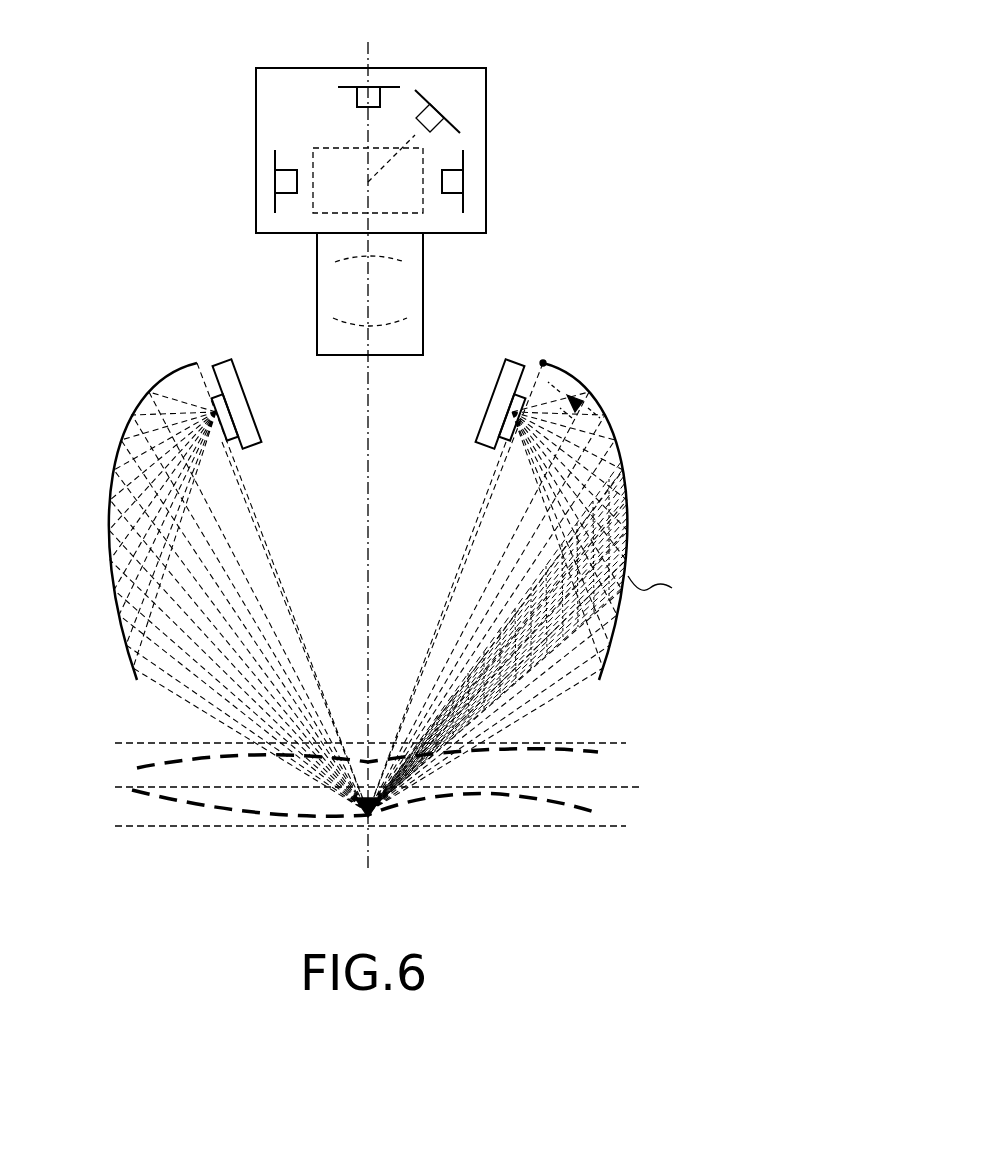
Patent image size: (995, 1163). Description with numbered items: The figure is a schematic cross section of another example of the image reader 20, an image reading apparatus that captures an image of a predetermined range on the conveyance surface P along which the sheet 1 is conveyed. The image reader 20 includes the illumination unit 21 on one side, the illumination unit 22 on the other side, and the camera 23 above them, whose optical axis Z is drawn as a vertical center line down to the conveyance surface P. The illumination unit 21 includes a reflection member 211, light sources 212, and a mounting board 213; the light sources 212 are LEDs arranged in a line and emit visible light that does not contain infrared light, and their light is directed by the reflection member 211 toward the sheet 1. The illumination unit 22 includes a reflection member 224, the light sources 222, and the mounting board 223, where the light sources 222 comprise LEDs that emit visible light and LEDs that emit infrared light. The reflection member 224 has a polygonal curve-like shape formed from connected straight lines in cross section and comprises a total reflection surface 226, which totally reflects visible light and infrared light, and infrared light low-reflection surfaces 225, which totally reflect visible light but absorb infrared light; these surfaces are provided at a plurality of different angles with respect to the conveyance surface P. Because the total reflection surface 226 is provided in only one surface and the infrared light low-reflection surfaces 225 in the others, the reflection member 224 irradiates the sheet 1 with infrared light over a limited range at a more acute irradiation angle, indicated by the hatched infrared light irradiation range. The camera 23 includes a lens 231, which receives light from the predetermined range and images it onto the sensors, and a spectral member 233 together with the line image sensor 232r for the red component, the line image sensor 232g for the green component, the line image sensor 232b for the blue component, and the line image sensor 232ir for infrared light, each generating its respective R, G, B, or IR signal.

The sheet 1 is at (590, 744).
The conveyance surface P is at (388, 784).
The optical axis Z is at (369, 441).
The image reader 20 is at (628, 181).
The illumination unit 21 is at (126, 348).
The illumination unit 22 is at (604, 322).
The camera 23 is at (487, 100).
The reflection member 211 is at (116, 458).
The light sources 212 is at (213, 388).
The mounting board 213 is at (243, 377).
The light sources 222 is at (543, 362).
The mounting board 223 is at (517, 360).
The reflection member 224 is at (617, 428).
The infrared light low-reflection surfaces 225 is at (582, 402).
The total reflection surface 226 is at (628, 512).
The lens 231 is at (424, 258).
The line image sensor 232r is at (350, 85).
The line image sensor 232ir is at (437, 100).
The line image sensor 232b is at (262, 184).
The line image sensor 232g is at (475, 182).
The spectral member 233 is at (333, 147).